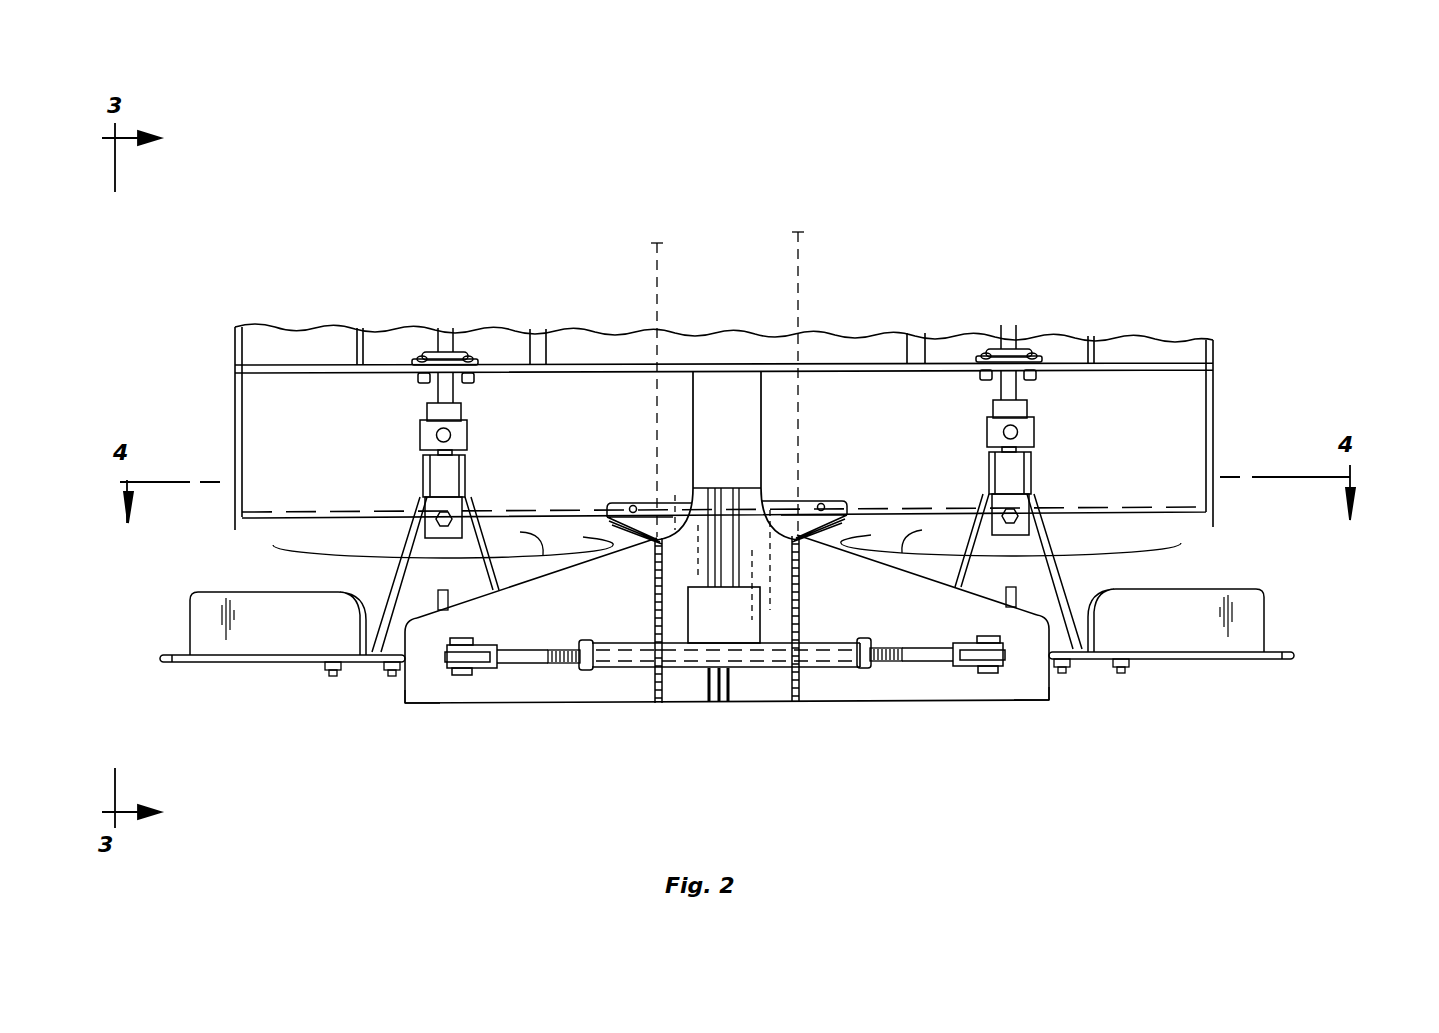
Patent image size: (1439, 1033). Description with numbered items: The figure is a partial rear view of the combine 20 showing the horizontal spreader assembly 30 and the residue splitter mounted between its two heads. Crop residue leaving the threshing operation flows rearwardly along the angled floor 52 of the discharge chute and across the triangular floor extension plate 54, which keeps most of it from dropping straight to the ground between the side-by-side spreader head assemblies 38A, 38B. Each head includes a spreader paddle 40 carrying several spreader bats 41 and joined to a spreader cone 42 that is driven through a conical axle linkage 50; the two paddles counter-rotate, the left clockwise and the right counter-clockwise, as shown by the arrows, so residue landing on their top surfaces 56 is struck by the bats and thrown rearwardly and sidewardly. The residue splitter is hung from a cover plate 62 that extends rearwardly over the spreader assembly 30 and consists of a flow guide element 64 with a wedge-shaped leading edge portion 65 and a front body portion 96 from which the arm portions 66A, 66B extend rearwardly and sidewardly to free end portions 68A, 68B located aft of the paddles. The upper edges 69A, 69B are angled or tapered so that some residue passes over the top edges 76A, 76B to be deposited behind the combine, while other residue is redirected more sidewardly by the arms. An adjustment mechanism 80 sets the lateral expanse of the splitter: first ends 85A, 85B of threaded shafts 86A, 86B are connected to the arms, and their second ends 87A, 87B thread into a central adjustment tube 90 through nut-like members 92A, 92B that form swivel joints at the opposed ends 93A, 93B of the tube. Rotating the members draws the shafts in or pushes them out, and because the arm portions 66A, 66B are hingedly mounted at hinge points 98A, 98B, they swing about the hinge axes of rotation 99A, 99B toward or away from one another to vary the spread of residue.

The combine 20 is at (1162, 238).
The horizontal spreader assembly 30 is at (1305, 559).
The spreader head assembly 38A is at (240, 558).
The spreader head assembly 38B is at (1212, 555).
The spreader paddle 40 is at (228, 667).
The spreader bats 41 is at (208, 600).
The spreader cone 42 is at (398, 540).
The conical axle linkage 50 is at (483, 460).
The angled floor 52 is at (283, 405).
The triangular floor extension plate 54 is at (823, 508).
The top surfaces 56 is at (305, 653).
The cover plate 62 is at (670, 363).
The flow guide element 64 is at (684, 432).
The leading edge portion 65 is at (732, 408).
The arm portion 66A is at (498, 700).
The arm portion 66B is at (945, 700).
The free end portion 68A is at (398, 692).
The free end portion 68B is at (1043, 692).
The upper edge 69A is at (497, 580).
The upper edge 69B is at (925, 572).
The top edge 76A is at (497, 575).
The top edge 76B is at (953, 569).
The adjustment mechanism 80 is at (750, 690).
The first end 85A is at (460, 677).
The first end 85B is at (952, 672).
The threaded shaft 86A is at (527, 668).
The threaded shaft 86B is at (875, 668).
The second end 87A is at (613, 652).
The second end 87B is at (810, 655).
The adjustment tube 90 is at (685, 690).
The threaded nut-like member 92A is at (582, 670).
The threaded nut-like member 92B is at (863, 670).
The opposed end 93A is at (590, 668).
The opposed end 93B is at (843, 677).
The front body portion 96 is at (755, 508).
The hinge point 98A is at (615, 508).
The hinge point 98B is at (847, 510).
The hinge axis of rotation 99A is at (651, 247).
The hinge axis of rotation 99B is at (804, 236).